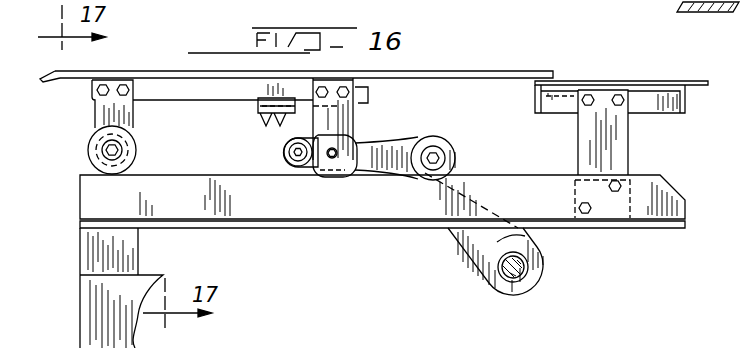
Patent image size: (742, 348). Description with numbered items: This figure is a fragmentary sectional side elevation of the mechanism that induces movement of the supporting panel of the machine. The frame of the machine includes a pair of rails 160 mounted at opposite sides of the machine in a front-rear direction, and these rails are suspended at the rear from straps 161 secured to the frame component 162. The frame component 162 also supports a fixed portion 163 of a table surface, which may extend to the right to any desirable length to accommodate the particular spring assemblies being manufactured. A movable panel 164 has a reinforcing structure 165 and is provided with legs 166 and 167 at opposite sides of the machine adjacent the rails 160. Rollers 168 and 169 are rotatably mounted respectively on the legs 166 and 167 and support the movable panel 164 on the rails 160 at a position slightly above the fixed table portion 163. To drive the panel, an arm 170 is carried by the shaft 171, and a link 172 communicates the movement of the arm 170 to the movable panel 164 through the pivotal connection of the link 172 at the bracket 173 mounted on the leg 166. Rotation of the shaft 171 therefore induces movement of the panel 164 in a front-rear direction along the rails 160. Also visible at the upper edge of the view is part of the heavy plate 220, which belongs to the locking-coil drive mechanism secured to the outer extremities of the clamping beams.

The rails 160 is at (648, 212).
The straps 161 is at (628, 152).
The frame component 162 is at (686, 104).
The fixed portion of table surface 163 is at (688, 81).
The movable panel 164 is at (487, 75).
The reinforcing structure 165 is at (195, 90).
The leg 166 is at (352, 116).
The leg 167 is at (94, 113).
The roller 168 is at (340, 140).
The roller 169 is at (96, 150).
The arm 170 is at (476, 252).
The shaft 171 is at (527, 268).
The link 172 is at (405, 147).
The bracket 173 is at (283, 150).
The heavy plate 220 is at (709, 31).